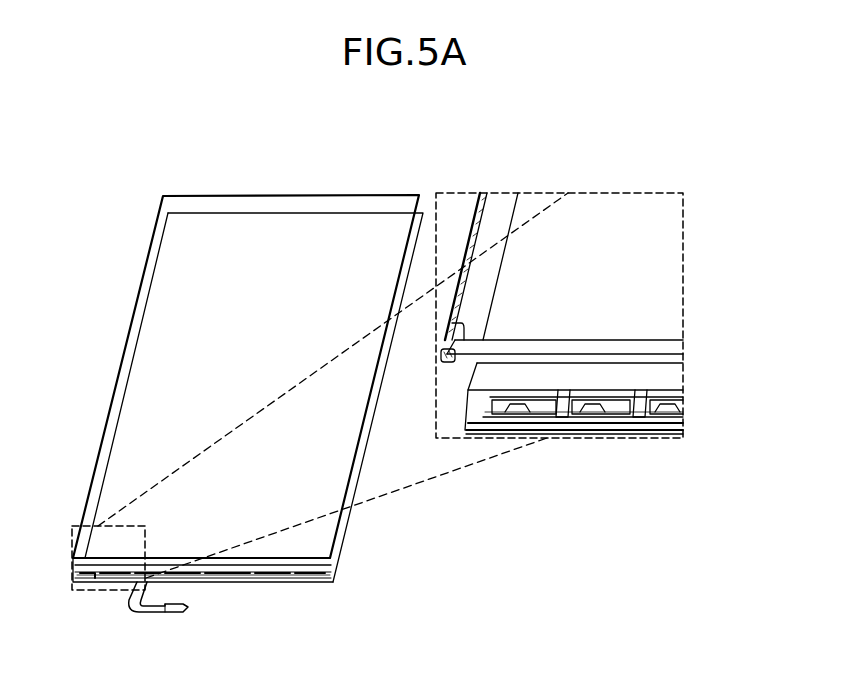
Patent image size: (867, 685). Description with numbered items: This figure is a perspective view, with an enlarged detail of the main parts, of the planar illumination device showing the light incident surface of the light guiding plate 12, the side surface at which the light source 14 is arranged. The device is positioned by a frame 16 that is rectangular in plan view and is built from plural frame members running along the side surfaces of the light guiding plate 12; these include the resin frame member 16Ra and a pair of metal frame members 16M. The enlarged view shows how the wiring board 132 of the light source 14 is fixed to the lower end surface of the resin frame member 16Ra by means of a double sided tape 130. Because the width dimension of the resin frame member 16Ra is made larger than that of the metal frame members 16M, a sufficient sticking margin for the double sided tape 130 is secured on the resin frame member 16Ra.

The frame 16 is at (125, 337).
The light guiding plate 12 is at (108, 446).
The light source 14 is at (93, 580).
The wiring board 132 is at (203, 572).
The double sided tape 130 is at (638, 420).
The metal frame member 16M is at (474, 226).
The resin frame member 16Ra is at (666, 363).